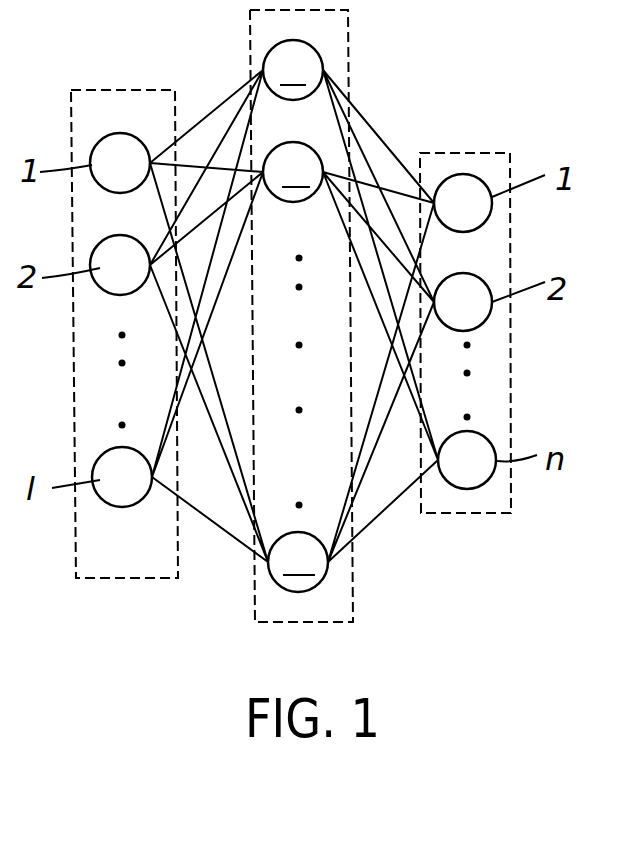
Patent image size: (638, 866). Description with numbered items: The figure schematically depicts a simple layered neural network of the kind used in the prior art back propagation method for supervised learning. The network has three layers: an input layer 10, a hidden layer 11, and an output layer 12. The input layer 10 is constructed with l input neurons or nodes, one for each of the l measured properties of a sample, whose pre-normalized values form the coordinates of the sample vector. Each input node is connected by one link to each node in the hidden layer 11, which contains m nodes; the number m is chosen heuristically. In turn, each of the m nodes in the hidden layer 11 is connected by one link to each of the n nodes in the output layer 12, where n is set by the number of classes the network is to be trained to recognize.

The input layer 10 is at (138, 89).
The hidden layer 11 is at (326, 622).
The output layer 12 is at (458, 153).